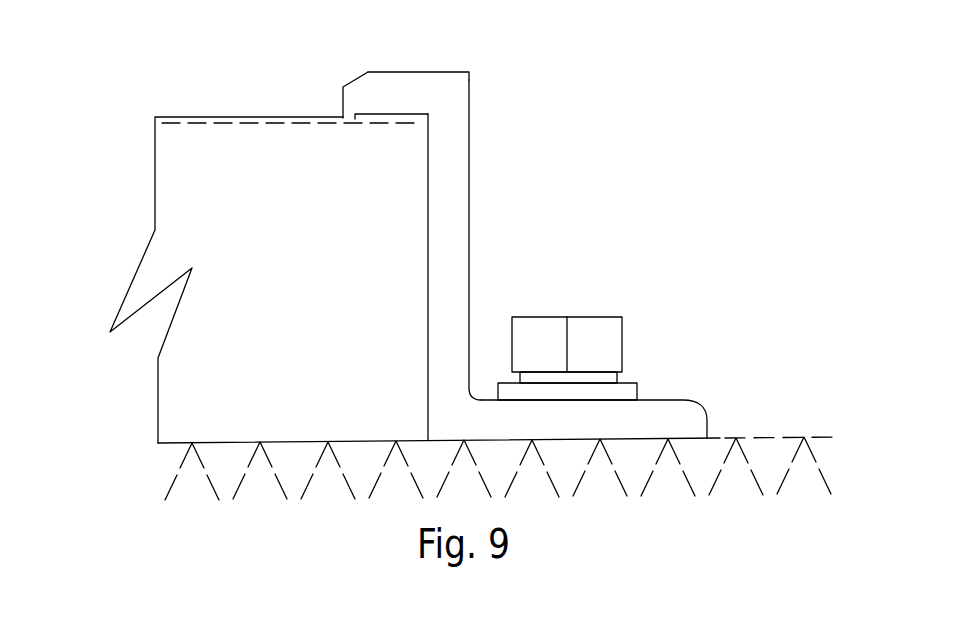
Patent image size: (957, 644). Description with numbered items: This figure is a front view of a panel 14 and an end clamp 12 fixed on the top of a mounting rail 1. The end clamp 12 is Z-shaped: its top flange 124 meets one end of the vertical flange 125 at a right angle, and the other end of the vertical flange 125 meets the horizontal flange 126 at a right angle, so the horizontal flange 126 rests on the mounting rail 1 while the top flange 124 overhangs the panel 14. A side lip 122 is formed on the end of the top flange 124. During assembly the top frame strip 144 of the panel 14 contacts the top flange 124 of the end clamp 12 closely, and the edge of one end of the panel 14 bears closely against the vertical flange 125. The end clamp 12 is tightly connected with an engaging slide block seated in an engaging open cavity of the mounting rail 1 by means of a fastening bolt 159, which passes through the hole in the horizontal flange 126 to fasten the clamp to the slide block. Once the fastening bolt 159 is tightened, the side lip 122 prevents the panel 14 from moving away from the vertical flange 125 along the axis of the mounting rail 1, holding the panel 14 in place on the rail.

The mounting rail 1 is at (812, 470).
The end clamp 12 is at (450, 99).
The panel 14 is at (247, 240).
The side lip 122 is at (348, 113).
The top frame strip 144 is at (383, 117).
The top flange 124 is at (438, 90).
The vertical flange 125 is at (450, 260).
The horizontal flange 126 is at (655, 416).
The fastening bolt 159 is at (600, 345).